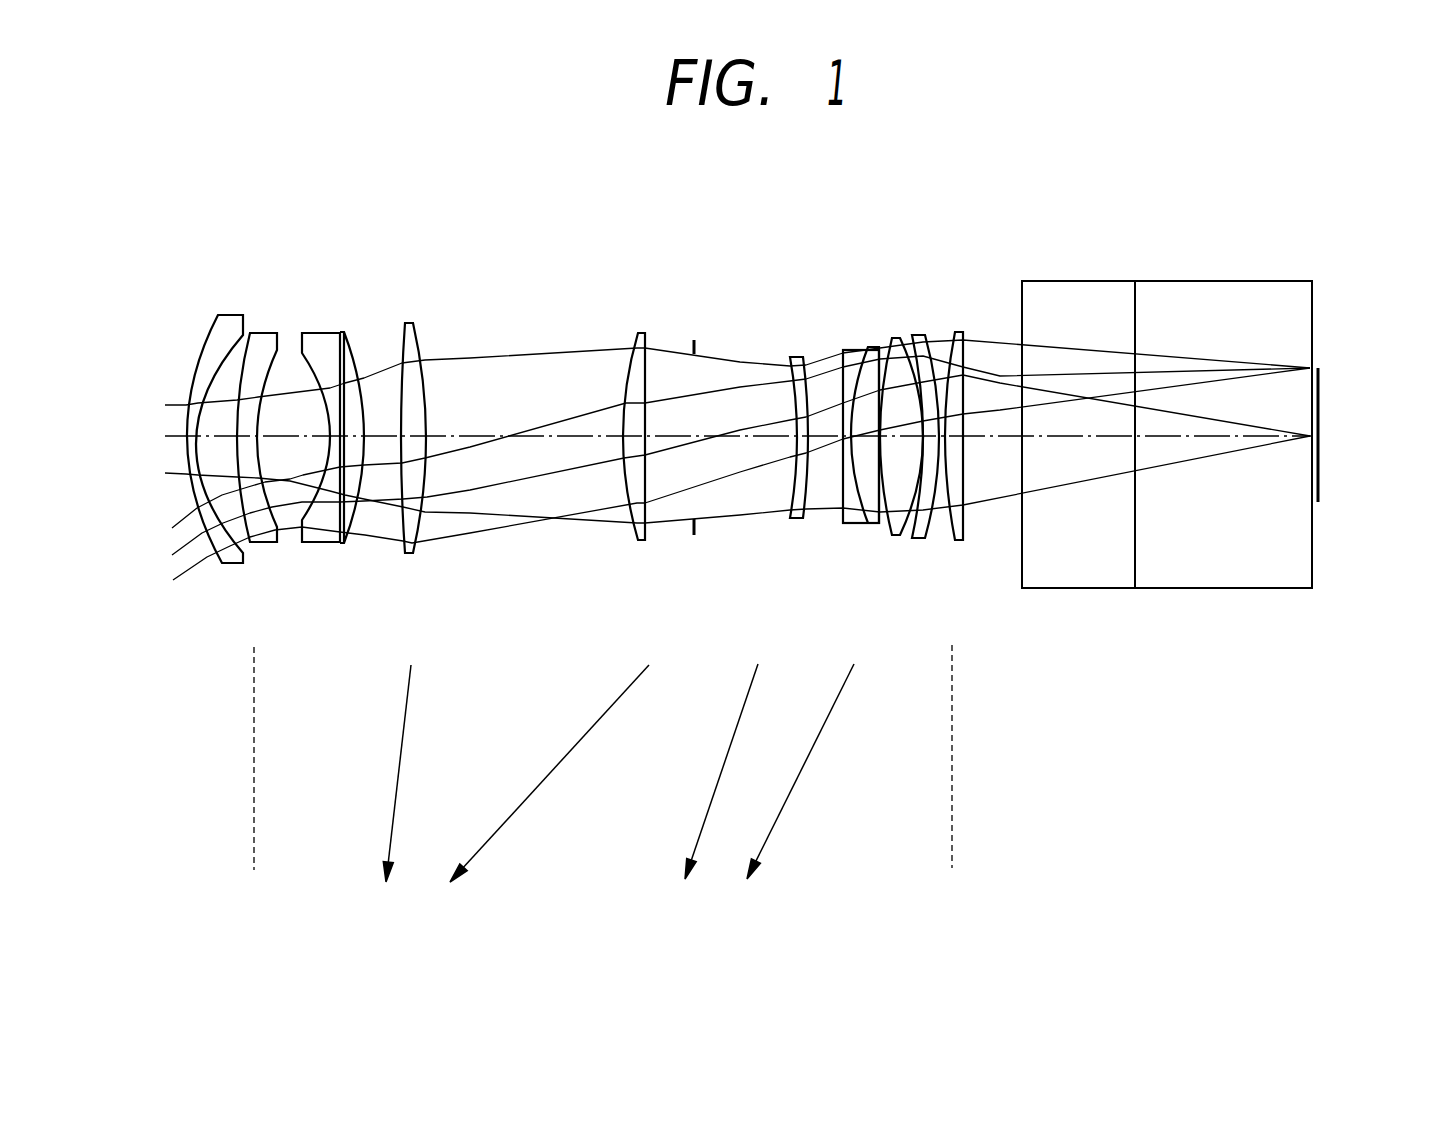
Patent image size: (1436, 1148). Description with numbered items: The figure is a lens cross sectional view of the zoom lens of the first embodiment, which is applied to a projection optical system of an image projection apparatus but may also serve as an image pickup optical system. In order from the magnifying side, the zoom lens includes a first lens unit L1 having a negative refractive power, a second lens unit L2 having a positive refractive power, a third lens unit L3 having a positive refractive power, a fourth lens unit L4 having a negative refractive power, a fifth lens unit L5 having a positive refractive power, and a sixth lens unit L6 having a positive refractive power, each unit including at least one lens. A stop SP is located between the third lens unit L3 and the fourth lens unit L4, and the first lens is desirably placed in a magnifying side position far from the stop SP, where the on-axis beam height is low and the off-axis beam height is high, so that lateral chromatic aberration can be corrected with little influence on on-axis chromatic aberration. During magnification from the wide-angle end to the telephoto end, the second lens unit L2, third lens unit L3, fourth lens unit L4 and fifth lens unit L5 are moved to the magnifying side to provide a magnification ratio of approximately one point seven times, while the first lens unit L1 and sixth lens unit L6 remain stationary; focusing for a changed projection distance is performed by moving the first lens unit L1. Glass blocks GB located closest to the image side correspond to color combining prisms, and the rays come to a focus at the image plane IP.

The first lens unit L1 is at (275, 360).
The second lens unit L2 is at (410, 355).
The third lens unit L3 is at (677, 348).
The fourth lens unit L4 is at (789, 337).
The fifth lens unit L5 is at (892, 347).
The sixth lens unit L6 is at (986, 348).
The stop SP is at (697, 523).
The glass block GB is at (1160, 558).
The image plane IP is at (1321, 478).